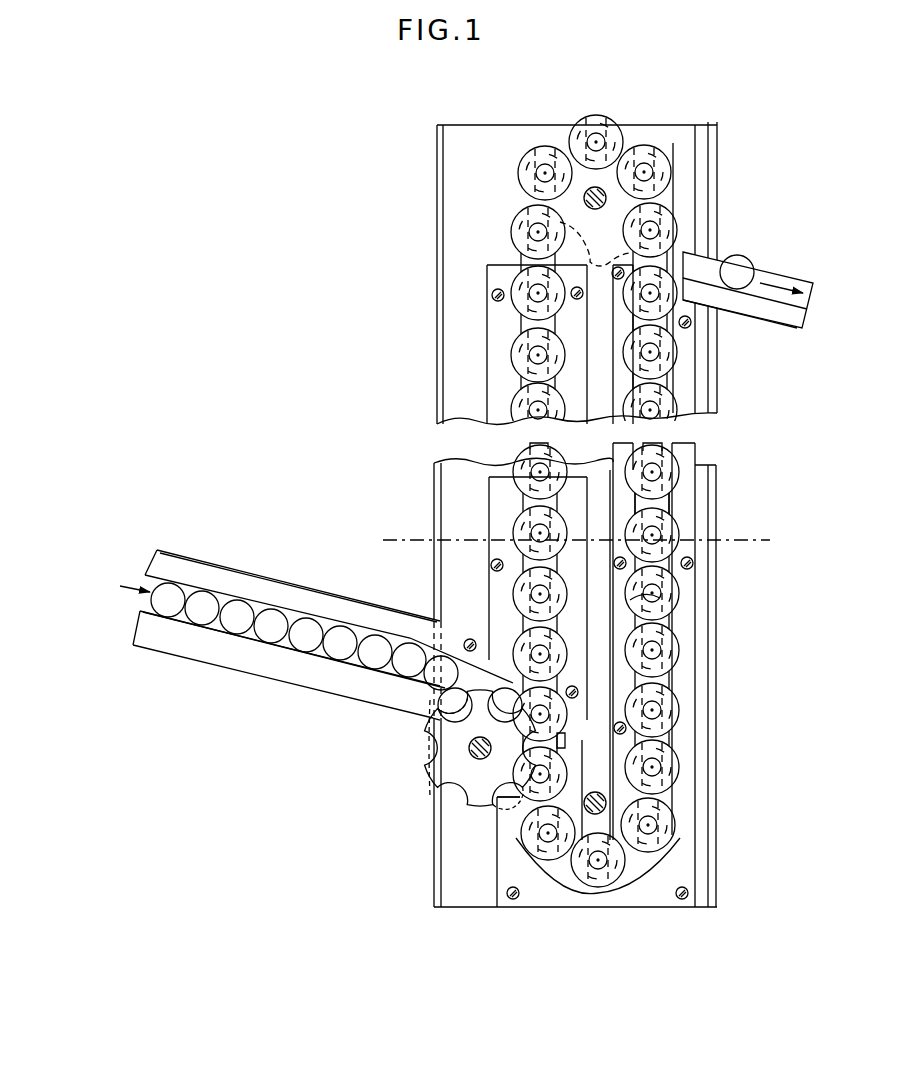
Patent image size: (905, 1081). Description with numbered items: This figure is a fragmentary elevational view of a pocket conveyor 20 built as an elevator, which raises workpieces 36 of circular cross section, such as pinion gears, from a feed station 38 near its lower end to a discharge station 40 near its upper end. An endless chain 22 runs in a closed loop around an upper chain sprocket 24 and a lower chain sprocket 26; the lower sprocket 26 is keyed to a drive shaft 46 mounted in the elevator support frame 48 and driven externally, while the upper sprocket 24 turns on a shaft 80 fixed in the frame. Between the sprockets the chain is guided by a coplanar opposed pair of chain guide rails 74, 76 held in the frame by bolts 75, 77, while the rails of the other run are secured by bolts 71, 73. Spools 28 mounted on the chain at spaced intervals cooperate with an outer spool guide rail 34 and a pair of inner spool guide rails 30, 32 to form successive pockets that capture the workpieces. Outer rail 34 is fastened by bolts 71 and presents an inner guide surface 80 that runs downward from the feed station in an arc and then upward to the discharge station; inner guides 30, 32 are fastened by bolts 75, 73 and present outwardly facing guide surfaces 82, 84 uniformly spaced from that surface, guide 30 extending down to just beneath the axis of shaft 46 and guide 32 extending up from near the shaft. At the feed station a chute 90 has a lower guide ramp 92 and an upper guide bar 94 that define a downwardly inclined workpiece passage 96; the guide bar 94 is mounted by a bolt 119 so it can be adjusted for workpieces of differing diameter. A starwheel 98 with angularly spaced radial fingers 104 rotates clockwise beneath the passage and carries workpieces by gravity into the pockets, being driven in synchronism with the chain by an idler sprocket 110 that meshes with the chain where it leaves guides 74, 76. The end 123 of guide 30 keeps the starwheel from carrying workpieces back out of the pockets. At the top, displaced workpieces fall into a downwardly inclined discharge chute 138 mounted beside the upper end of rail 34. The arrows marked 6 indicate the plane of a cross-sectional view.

The pocket conveyor 20 is at (422, 279).
The endless chain 22 is at (628, 140).
The upper chain sprocket 24 is at (563, 241).
The lower chain sprocket 26 is at (622, 752).
The spools 28 is at (518, 290).
The inner spool guide rail 30 is at (648, 895).
The inner spool guide rail 32 is at (563, 800).
The outer spool guide rail 34 is at (622, 677).
The workpieces 36 is at (304, 625).
The feed station 38 is at (415, 770).
The discharge station 40 is at (732, 213).
The drive shaft 46 is at (596, 792).
The elevator support frame 48 is at (719, 133).
The bolts 71 is at (693, 565).
The bolts 73 is at (614, 563).
The chain guide rail 74 is at (573, 338).
The bolts 75 is at (582, 289).
The chain guide rail 76 is at (497, 375).
The bolts 77 is at (492, 298).
The inner guide surface 80 is at (665, 583).
The guide surface 82 is at (566, 737).
The guide surface 84 is at (640, 600).
The chute 90 is at (225, 562).
The lower guide ramp 92 is at (268, 662).
The upper guide bar 94 is at (387, 613).
The workpiece passage 96 is at (182, 623).
The starwheel 98 is at (427, 772).
The radial fingers 104 is at (475, 783).
The idler sprocket 110 is at (423, 733).
The bolt 119 is at (470, 638).
The end of guide 123 is at (497, 798).
The discharge chute 138 is at (776, 312).
The section line 6- 6 is at (394, 505).